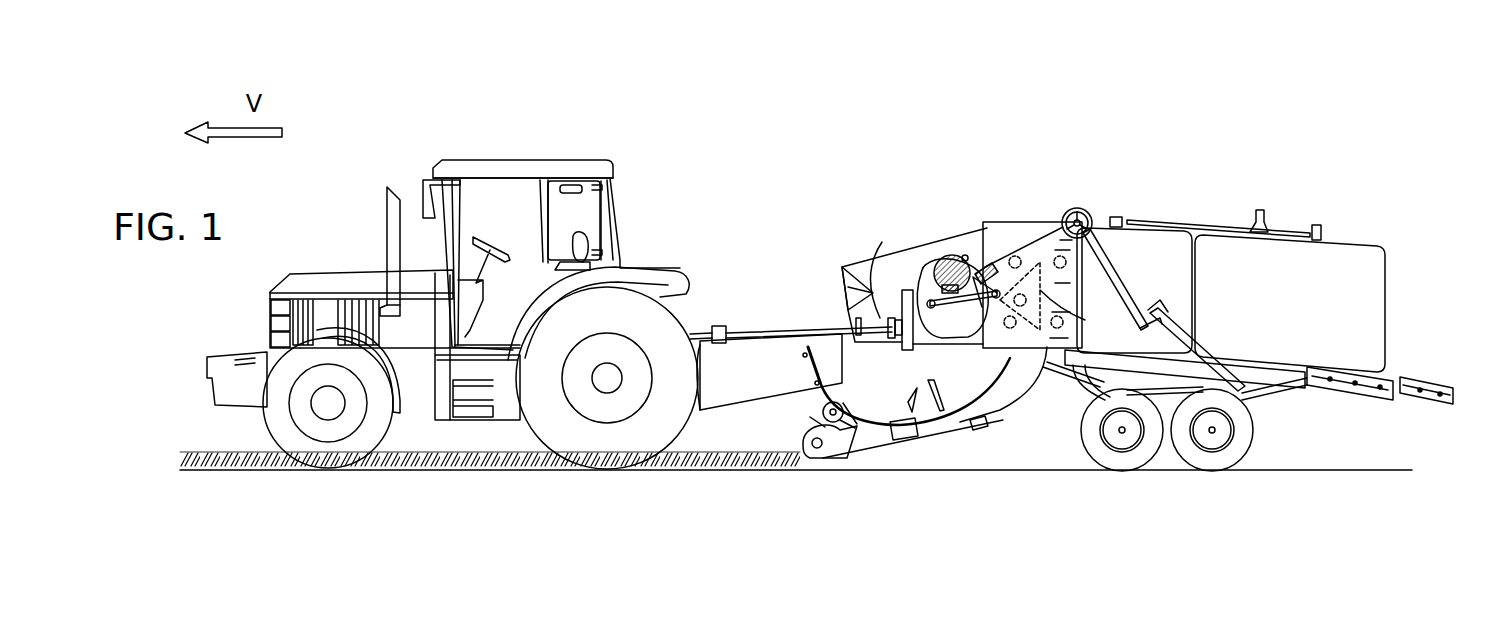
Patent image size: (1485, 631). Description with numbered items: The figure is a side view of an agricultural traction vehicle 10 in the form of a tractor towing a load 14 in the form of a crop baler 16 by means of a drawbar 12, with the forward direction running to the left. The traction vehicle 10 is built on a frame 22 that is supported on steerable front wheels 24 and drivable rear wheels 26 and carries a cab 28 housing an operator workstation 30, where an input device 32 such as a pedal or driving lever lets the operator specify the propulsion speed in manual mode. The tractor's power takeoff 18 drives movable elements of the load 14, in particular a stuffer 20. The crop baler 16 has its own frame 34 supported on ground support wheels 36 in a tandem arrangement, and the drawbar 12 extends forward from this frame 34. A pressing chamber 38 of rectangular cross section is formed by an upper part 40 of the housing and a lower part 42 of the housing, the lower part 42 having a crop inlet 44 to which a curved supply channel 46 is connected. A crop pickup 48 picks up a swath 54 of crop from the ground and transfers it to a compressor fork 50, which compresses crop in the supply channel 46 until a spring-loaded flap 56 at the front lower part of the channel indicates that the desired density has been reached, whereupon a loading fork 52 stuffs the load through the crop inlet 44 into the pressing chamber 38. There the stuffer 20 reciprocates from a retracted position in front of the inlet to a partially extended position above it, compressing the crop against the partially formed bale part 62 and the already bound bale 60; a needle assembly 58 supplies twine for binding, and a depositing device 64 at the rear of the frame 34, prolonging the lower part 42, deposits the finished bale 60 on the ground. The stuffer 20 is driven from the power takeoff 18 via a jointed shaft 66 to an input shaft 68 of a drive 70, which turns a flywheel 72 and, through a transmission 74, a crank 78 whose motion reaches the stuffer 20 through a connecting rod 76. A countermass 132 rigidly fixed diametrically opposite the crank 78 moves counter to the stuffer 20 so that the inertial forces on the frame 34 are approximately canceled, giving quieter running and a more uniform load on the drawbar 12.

The agricultural traction vehicle 10 is at (535, 122).
The drawbar 12 is at (780, 385).
The load 14 is at (1075, 292).
The crop baler 16 is at (1075, 322).
The power takeoff 18 is at (700, 330).
The stuffer 20 is at (1060, 304).
The frame 22 is at (452, 310).
The steerable front wheels 24 is at (308, 452).
The drivable rear wheels 26 is at (588, 448).
The cab 28 is at (575, 173).
The operator workstation 30 is at (578, 242).
The input device 32 is at (476, 340).
The frame 34 is at (1163, 368).
The ground support wheels 36 is at (1145, 470).
The pressing chamber 38 is at (1163, 277).
The upper part of the housing 40 is at (1222, 235).
The lower part of the housing 42 is at (1262, 372).
The crop inlet 44 is at (1025, 366).
The curved supply channel 46 is at (1007, 410).
The crop pickup 48 is at (803, 454).
The compressor fork 50 is at (907, 402).
The loading fork 52 is at (938, 383).
The swath 54 is at (708, 472).
The spring-loaded flap 56 is at (978, 428).
The needle assembly 58 is at (1205, 348).
The bale 60 is at (1331, 297).
The bale part 62 is at (1130, 245).
The depositing device 64 is at (1372, 375).
The jointed shaft 66 is at (806, 334).
The input shaft 68 is at (880, 286).
The drive 70 is at (888, 339).
The flywheel 72 is at (906, 290).
The transmission 74 is at (946, 256).
The connecting rod 76 is at (986, 262).
The crank 78 is at (927, 276).
The countermass 132 is at (965, 255).